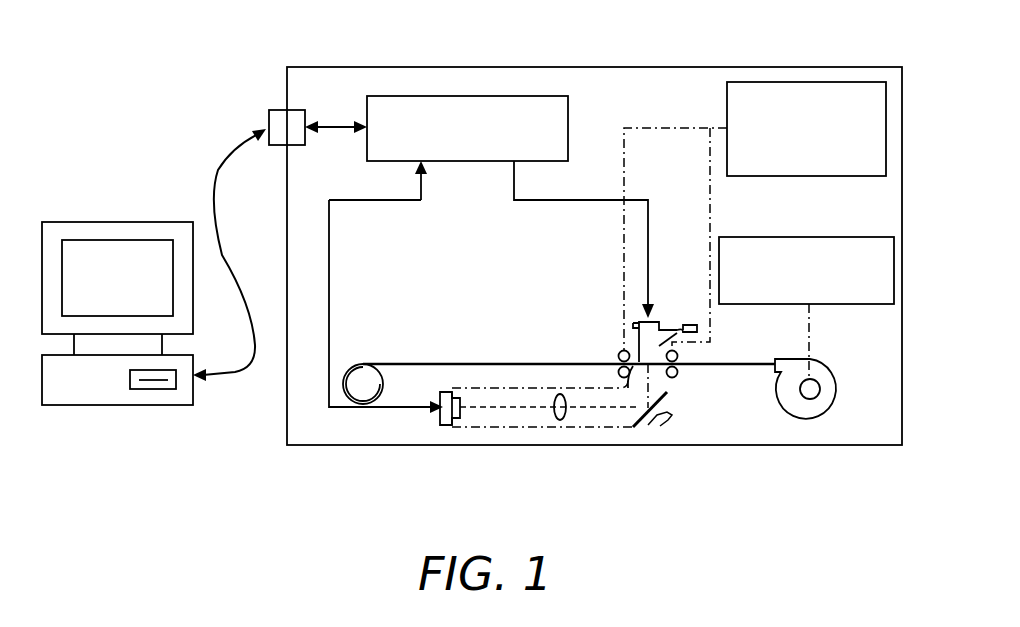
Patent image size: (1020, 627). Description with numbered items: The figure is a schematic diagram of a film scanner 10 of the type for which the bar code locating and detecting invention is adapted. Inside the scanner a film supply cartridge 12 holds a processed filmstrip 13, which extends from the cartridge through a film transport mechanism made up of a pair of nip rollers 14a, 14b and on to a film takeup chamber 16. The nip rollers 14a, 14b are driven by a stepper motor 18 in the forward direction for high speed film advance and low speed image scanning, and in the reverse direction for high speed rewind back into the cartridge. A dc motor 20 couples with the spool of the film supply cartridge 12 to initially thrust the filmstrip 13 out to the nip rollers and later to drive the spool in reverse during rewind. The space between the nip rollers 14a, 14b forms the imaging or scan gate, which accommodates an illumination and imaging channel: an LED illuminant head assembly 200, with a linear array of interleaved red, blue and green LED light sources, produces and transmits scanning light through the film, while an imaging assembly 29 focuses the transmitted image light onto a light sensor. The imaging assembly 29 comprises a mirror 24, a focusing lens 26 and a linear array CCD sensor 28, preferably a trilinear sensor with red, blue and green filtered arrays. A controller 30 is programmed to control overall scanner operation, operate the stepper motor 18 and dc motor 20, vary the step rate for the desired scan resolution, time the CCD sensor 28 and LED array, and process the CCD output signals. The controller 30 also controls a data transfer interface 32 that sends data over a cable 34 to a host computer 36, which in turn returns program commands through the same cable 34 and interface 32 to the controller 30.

The film scanner 10 is at (608, 60).
The film supply cartridge 12 is at (812, 420).
The processed filmstrip 13 is at (747, 366).
The nip roller 14a is at (618, 353).
The nip roller 14b is at (672, 378).
The film takeup chamber 16 is at (363, 404).
The stepper motor 18 is at (780, 82).
The dc motor 20 is at (818, 237).
The mirror 24 is at (640, 422).
The focusing lens 26 is at (567, 420).
The linear array CCD sensor 28 is at (454, 425).
The imaging assembly 29 is at (527, 430).
The controller 30 is at (442, 96).
The data transfer interface 32 is at (270, 110).
The cable 34 is at (220, 165).
The host computer 36 is at (106, 222).
The LED illuminant head assembly 200 is at (636, 345).